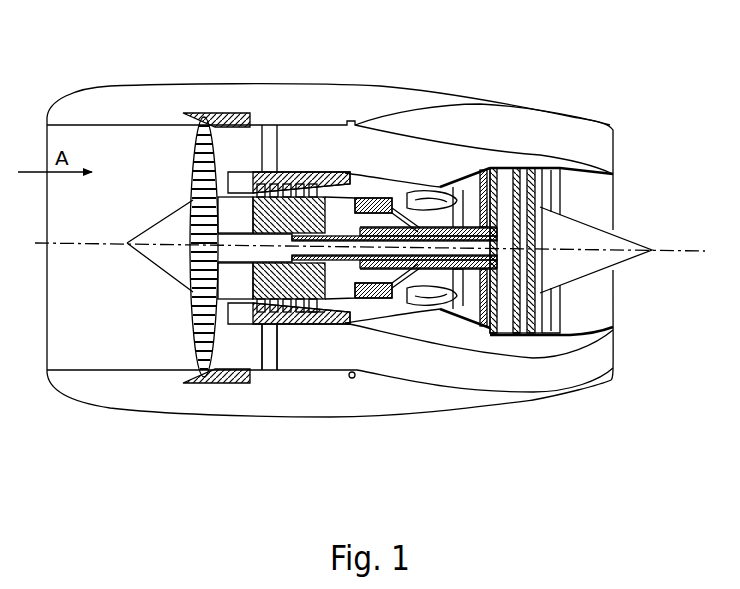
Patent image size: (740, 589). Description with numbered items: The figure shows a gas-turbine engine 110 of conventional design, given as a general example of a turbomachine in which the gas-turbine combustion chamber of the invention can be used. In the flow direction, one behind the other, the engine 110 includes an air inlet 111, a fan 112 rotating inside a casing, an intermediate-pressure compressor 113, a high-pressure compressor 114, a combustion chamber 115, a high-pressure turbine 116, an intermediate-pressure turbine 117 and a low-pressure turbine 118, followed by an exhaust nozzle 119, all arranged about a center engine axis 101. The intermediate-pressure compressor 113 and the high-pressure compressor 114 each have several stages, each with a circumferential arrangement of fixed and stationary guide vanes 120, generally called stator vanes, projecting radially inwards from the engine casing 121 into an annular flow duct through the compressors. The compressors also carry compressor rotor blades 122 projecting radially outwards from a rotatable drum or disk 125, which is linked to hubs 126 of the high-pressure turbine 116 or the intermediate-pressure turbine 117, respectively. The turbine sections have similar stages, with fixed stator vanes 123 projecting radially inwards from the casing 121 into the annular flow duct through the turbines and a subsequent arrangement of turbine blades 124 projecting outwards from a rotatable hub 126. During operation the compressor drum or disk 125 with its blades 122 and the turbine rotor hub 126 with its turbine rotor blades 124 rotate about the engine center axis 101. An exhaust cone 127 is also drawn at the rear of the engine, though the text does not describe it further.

The center engine axis 101 is at (109, 246).
The gas-turbine engine 110 is at (397, 138).
The air inlet 111 is at (168, 162).
The fan 112 is at (193, 114).
The intermediate-pressure compressor 113 is at (305, 172).
The high-pressure compressor 114 is at (383, 185).
The combustion chamber 115 is at (427, 198).
The high-pressure turbine 116 is at (457, 191).
The intermediate-pressure turbine 117 is at (492, 175).
The low-pressure turbine 118 is at (540, 165).
The exhaust nozzle 119 is at (565, 203).
The guide vanes 120 is at (263, 327).
The engine casing 121 is at (282, 327).
The compressor rotor blades 122 is at (317, 327).
The stator vanes 123 is at (490, 337).
The turbine blades 124 is at (517, 330).
The compressor drum or disk 125 is at (360, 300).
The turbine rotor hub 126 is at (467, 320).
The exhaust cone 127 is at (622, 243).